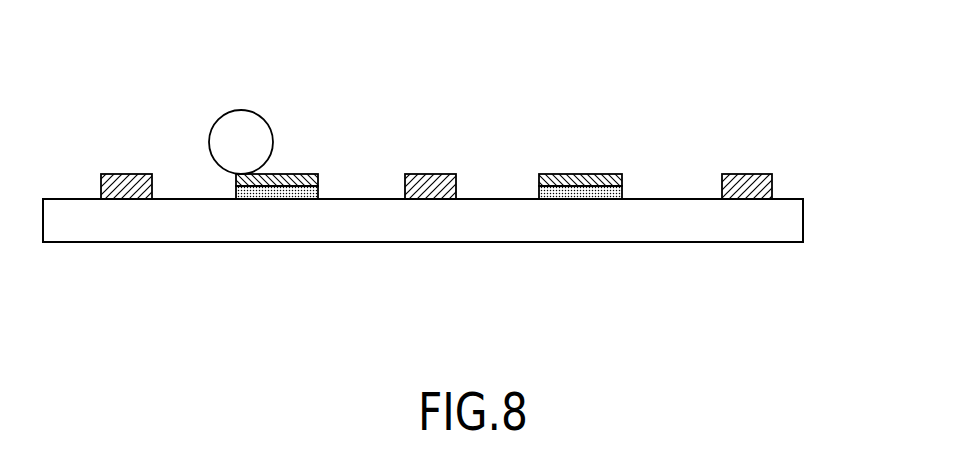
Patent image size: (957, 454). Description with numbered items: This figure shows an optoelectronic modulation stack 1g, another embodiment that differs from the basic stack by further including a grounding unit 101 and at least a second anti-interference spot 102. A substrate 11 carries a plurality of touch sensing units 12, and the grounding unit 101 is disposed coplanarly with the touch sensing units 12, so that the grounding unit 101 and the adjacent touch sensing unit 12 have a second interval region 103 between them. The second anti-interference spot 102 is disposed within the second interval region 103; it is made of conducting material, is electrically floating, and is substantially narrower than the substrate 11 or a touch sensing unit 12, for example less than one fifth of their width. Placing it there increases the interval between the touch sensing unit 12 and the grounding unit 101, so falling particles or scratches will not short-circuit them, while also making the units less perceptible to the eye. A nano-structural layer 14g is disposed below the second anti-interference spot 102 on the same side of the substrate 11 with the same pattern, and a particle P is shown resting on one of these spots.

The optoelectronic modulation stack 1g is at (137, 55).
The substrate 11 is at (792, 228).
The touch sensing unit 12 is at (123, 192).
The nano-structural layer 14g is at (275, 190).
The grounding unit 101 is at (428, 192).
The second anti-interference spot 102 is at (295, 175).
The second interval region 103 is at (726, 125).
The solder ball P is at (240, 116).